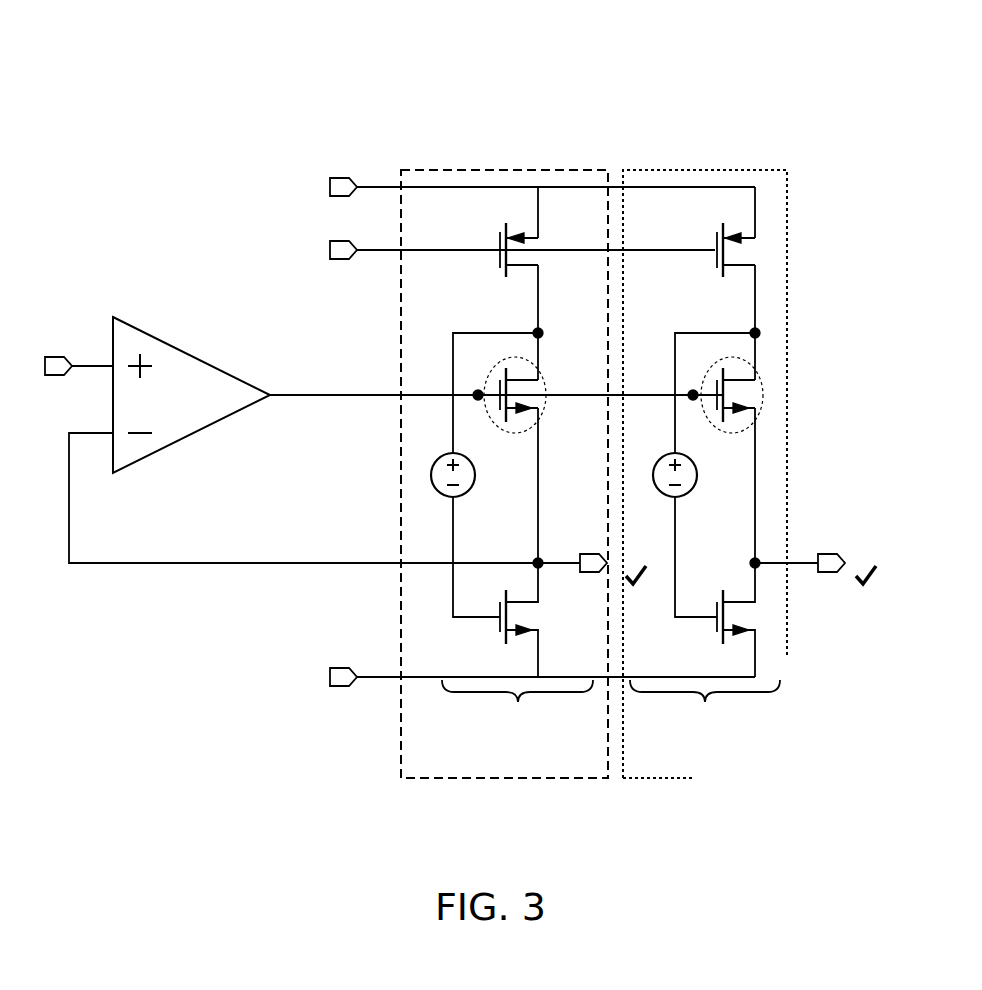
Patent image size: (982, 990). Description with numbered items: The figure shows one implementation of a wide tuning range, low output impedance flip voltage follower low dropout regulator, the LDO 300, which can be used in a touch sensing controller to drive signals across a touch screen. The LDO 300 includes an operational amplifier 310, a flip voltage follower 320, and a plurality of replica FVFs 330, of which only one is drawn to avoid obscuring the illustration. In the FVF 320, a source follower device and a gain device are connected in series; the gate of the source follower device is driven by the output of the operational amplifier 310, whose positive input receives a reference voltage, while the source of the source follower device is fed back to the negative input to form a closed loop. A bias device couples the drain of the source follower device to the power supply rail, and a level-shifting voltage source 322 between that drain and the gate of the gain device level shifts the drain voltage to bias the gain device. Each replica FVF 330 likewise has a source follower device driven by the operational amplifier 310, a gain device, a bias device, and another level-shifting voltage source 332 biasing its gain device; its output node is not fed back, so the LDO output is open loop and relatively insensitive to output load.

The low dropout regulator 300 is at (703, 72).
The operational amplifier 310 is at (190, 348).
The flip voltage follower 320 is at (452, 168).
The level-shifting voltage source 322 is at (436, 460).
The replica FVF 330 is at (657, 168).
The level-shifting voltage source 332 is at (672, 452).